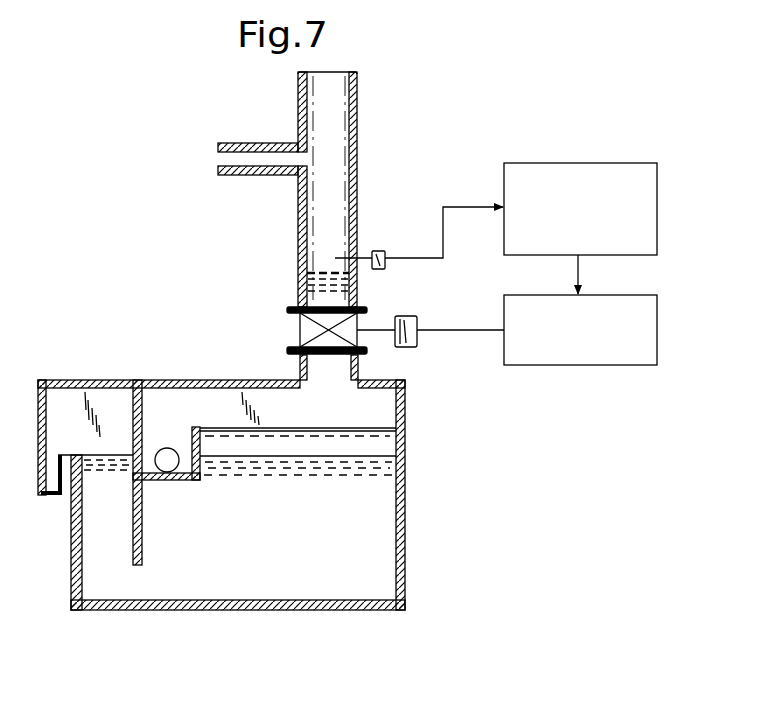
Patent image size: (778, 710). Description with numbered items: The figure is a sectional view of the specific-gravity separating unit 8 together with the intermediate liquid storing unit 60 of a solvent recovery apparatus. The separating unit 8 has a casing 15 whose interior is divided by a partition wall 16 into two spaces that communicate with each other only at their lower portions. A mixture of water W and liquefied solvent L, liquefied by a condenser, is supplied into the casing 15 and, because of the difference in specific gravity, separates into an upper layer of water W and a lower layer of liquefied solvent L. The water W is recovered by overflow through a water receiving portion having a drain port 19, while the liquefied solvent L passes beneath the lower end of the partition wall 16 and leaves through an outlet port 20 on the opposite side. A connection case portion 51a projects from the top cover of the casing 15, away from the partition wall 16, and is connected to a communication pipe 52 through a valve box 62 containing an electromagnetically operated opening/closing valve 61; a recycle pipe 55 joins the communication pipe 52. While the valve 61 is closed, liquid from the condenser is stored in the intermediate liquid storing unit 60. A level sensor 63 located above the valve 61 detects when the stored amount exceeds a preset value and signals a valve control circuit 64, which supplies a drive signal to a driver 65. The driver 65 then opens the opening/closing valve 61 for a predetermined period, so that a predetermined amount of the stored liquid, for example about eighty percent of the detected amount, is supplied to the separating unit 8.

The specific-gravity separating unit 8 is at (72, 584).
The casing 15 is at (405, 553).
The partition wall 16 is at (132, 425).
The drain port 19 is at (168, 447).
The outlet port 20 is at (48, 495).
The connection case portion 51a is at (297, 367).
The communication pipe 52 is at (357, 117).
The recycle pipe 55 is at (243, 143).
The intermediate liquid storing unit 60 is at (325, 243).
The opening/closing valve 61 is at (327, 330).
The valve box 62 is at (305, 330).
The level sensor 63 is at (355, 230).
The valve control circuit 64 is at (587, 168).
The driver 65 is at (605, 358).
The water W is at (233, 437).
The liquefied solvent L is at (312, 567).